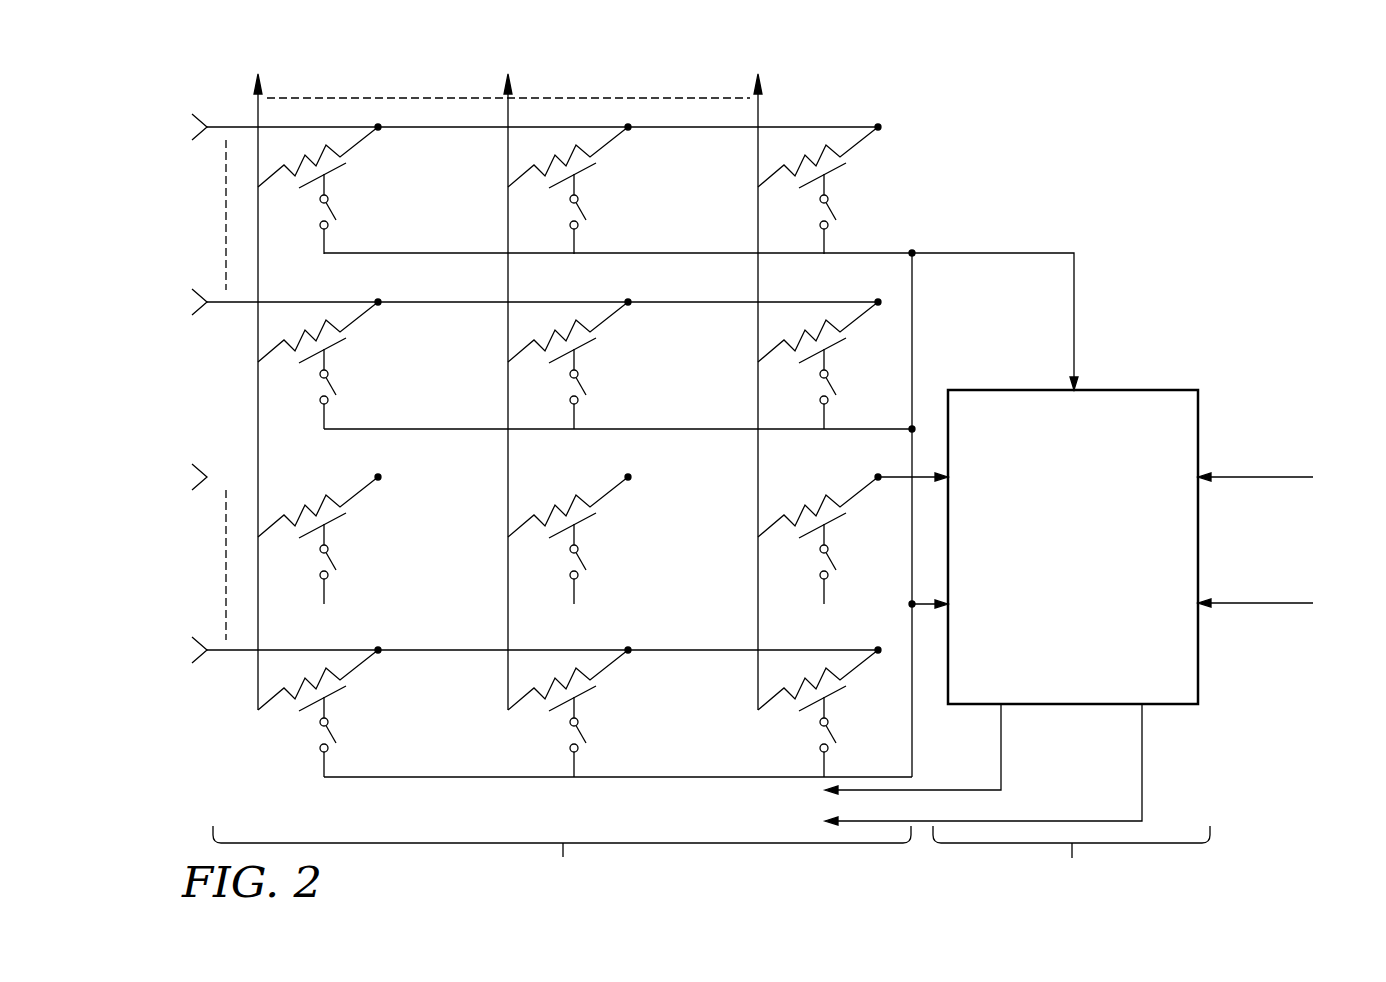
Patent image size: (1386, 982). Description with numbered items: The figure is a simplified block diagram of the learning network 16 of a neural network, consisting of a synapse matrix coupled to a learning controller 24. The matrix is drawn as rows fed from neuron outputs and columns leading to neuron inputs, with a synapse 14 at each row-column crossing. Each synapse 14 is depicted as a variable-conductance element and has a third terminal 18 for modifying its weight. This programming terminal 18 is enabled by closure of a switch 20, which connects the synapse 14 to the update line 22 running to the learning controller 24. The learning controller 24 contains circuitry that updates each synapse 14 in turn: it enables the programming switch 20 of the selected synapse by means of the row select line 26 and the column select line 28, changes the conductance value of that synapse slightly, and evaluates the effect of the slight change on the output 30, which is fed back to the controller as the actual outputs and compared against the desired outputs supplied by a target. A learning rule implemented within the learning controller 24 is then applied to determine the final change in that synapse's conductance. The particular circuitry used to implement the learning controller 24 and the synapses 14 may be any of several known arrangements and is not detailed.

The synapse 14 is at (569, 440).
The learning network 16 is at (1150, 199).
The third terminal 18 is at (606, 469).
The switch 20 is at (611, 479).
The update line 22 is at (1074, 346).
The learning controller 24 is at (1198, 435).
The row select line 26 is at (1001, 772).
The column select line 28 is at (1142, 778).
The output 30 is at (925, 528).